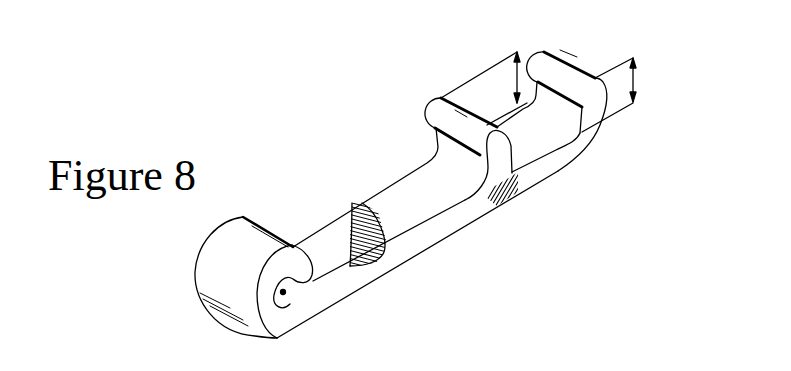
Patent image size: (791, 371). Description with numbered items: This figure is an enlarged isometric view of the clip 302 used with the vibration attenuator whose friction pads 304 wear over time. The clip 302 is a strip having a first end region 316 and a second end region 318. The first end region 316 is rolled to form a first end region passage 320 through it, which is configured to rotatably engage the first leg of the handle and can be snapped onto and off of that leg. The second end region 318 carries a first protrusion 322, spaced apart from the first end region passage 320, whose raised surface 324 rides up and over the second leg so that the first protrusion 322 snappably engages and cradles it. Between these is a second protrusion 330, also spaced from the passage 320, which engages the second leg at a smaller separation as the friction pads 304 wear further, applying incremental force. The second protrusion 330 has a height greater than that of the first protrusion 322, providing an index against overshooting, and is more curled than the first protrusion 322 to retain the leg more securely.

The clip 302 is at (300, 90).
The friction pad 304 is at (514, 170).
The first end region 316 is at (178, 273).
The second end region 318 is at (581, 182).
The first end region passage 320 is at (283, 292).
The first protrusion 322 is at (580, 55).
The raised surface 324 is at (554, 78).
The second protrusion 330 is at (434, 114).